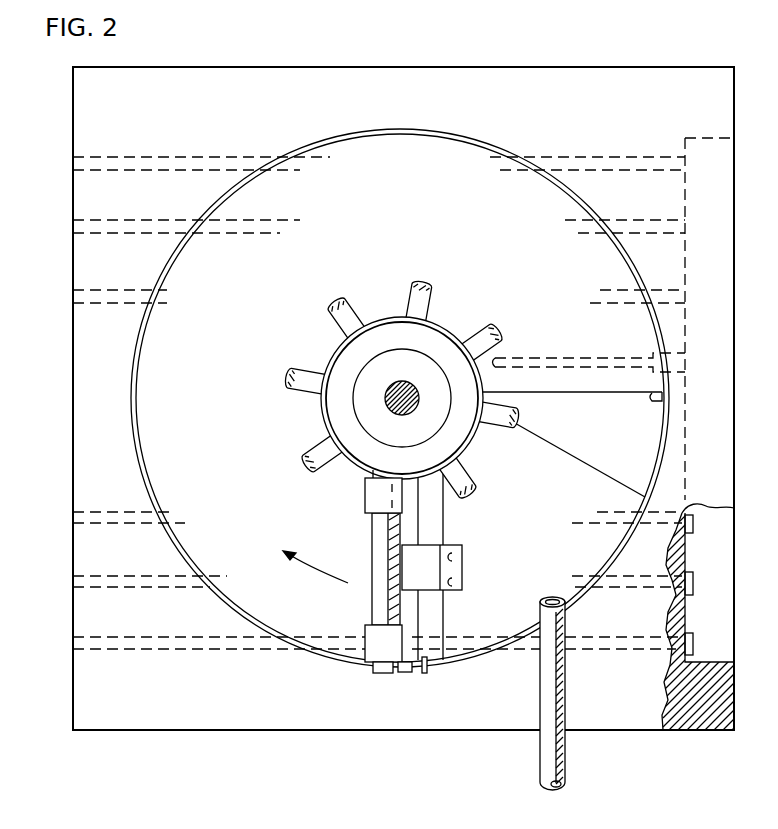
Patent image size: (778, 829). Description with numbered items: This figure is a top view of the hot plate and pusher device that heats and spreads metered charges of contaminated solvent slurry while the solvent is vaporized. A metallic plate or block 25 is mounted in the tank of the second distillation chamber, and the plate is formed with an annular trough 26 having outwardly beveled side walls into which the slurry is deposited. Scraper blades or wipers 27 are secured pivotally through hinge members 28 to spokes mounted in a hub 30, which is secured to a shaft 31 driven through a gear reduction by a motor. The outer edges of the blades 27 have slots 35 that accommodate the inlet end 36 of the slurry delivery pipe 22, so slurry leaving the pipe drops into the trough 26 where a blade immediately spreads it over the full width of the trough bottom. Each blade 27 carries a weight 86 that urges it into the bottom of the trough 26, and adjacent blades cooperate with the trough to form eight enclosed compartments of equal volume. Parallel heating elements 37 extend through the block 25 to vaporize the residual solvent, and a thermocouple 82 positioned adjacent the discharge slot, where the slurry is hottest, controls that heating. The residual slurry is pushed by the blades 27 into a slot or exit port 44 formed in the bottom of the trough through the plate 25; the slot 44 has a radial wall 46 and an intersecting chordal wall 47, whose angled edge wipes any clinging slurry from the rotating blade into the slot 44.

The slurry delivery pipe 22 is at (540, 762).
The metallic plate or block 25 is at (308, 70).
The annular trough 26 is at (478, 146).
The scraper blades or wipers 27 is at (434, 612).
The hinge members 28 is at (365, 497).
The hub 30 is at (348, 357).
The shaft 31 is at (386, 399).
The slots 35 is at (415, 668).
The inlet end 36 is at (546, 600).
The heating elements 37 is at (92, 636).
The slot or exit port 44 is at (609, 423).
The radial wall 46 is at (664, 396).
The chordal wall 47 is at (585, 457).
The thermocouple 82 is at (568, 358).
The weight 86 is at (463, 566).